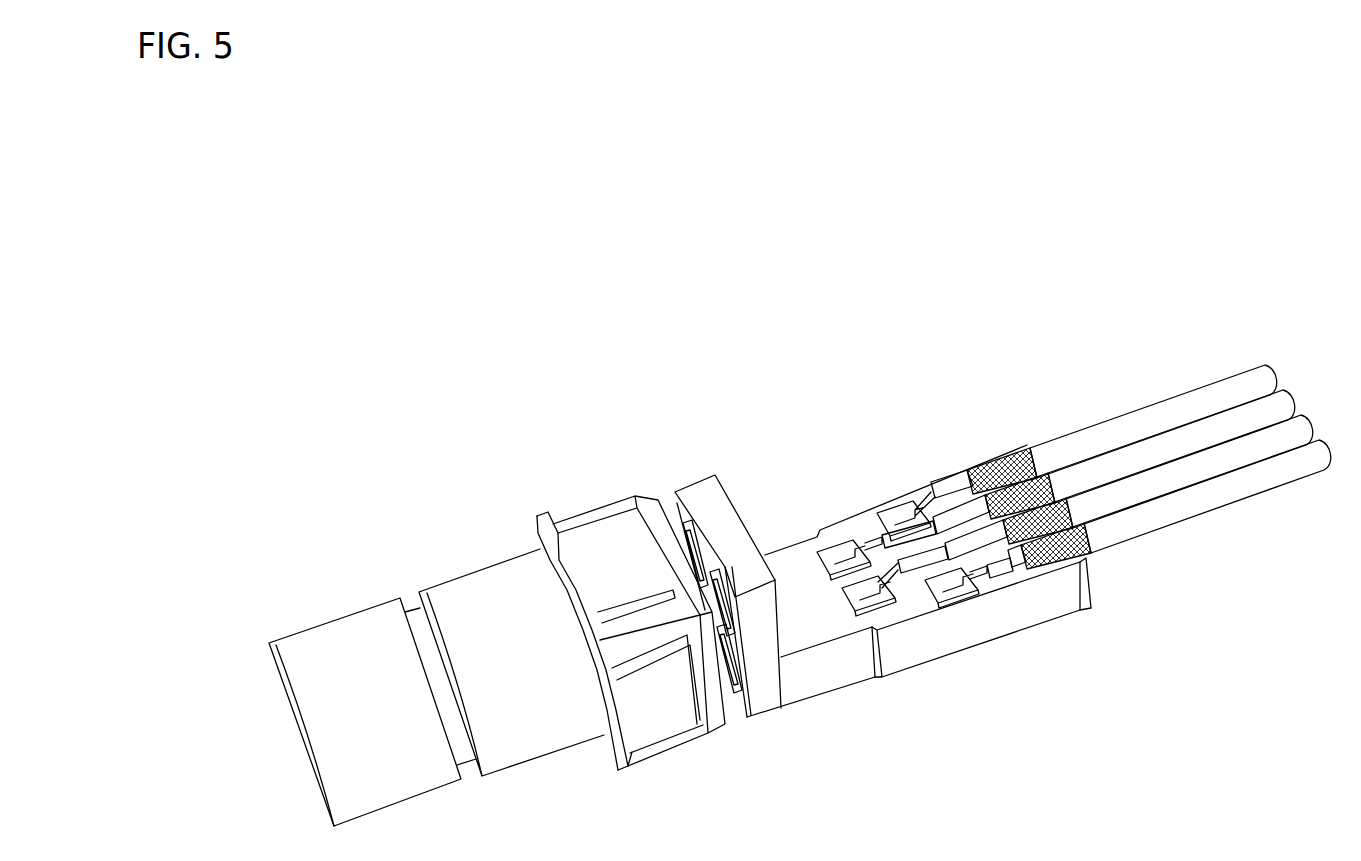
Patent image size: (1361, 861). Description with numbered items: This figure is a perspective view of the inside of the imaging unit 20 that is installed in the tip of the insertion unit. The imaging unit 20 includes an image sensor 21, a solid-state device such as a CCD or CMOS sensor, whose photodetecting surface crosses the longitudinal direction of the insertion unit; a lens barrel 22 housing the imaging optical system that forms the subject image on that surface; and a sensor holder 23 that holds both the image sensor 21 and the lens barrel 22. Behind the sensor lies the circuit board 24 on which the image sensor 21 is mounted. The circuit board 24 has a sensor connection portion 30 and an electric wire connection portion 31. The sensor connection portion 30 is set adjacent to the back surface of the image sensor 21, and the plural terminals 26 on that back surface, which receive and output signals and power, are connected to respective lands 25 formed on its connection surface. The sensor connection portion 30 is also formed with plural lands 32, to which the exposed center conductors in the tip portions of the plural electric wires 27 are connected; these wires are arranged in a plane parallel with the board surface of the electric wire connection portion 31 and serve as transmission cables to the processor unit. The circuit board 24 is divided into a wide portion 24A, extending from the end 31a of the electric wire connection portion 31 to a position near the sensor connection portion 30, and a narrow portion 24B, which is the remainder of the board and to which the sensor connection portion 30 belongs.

The imaging unit 20 is at (386, 376).
The image sensor 21 is at (590, 510).
The lens barrel 22 is at (345, 627).
The sensor holder 23 is at (485, 578).
The circuit board 24 is at (830, 380).
The wide portion 24A is at (1036, 612).
The narrow portion 24B is at (828, 680).
The lands 25 is at (677, 515).
The terminals 26 is at (723, 670).
The electric wires 27 is at (1172, 517).
The sensor connection portion 30 is at (715, 477).
The electric wire connection portion 31 is at (838, 518).
The end 31a is at (1088, 600).
The lands 32 is at (948, 600).